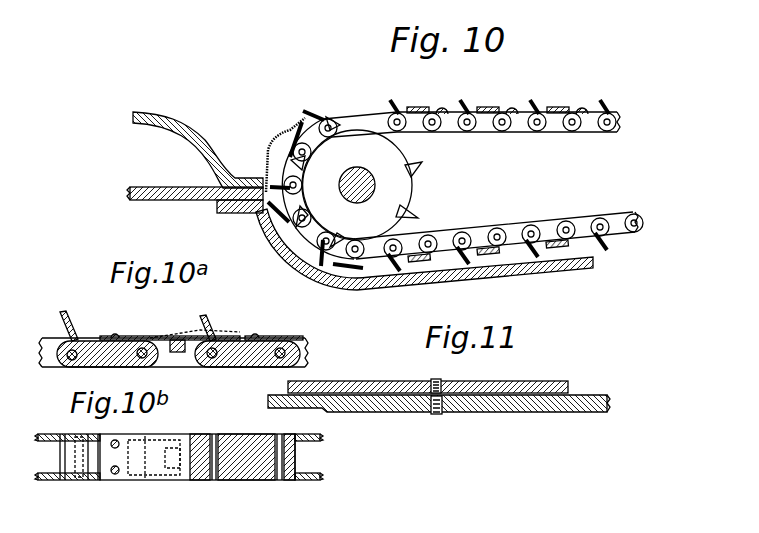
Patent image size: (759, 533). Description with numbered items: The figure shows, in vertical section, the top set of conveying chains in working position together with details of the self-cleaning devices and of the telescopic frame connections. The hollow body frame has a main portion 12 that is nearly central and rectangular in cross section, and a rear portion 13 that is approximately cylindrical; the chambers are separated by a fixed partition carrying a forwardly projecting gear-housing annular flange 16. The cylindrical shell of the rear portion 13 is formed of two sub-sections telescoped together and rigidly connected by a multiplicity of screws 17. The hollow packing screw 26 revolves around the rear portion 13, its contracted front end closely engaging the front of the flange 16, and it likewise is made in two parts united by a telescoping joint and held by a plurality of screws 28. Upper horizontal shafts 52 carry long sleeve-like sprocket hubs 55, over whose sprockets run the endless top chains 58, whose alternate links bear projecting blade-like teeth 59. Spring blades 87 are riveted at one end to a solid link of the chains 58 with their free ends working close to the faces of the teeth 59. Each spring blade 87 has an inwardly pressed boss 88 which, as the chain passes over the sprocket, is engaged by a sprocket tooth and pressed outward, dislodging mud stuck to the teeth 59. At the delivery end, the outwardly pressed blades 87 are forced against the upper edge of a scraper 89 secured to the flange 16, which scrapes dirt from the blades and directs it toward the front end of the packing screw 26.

In FIG. 10, the main portion of the hollow body frame 12 is at (375, 288).
In FIG. 11, the rear portion of the hollow body frame 13 is at (347, 383).
In FIG. 10, the gear-housing annular flange 16 is at (148, 186).
In FIG. 11, the screws 17 is at (433, 382).
In FIG. 10, the packing screw 26 is at (143, 111).
In FIG. 11, the packing screw 26 is at (493, 413).
In FIG. 11, the screws 28 is at (438, 415).
In FIG. 10, the upper horizontal shafts 52 is at (375, 197).
In FIG. 10, the sprocket hubs 55 is at (380, 153).
In FIG. 10, the top chains 58 is at (543, 222).
In FIG. 10A, the top chains 58 is at (93, 338).
In FIG. 10B, the top chains 58 is at (93, 478).
In FIG. 10, the blade-like teeth 59 is at (396, 100).
In FIG. 10A, the blade-like teeth 59 is at (65, 311).
In FIG. 10B, the blade-like teeth 59 is at (65, 478).
In FIG. 10, the spring blades 87 is at (373, 108).
In FIG. 10A, the spring blades 87 is at (178, 333).
In FIG. 10B, the spring blades 87 is at (152, 481).
In FIG. 10, the bosses 88 is at (522, 128).
In FIG. 10A, the bosses 88 is at (183, 336).
In FIG. 10B, the bosses 88 is at (187, 481).
In FIG. 10, the scraper 89 is at (273, 137).